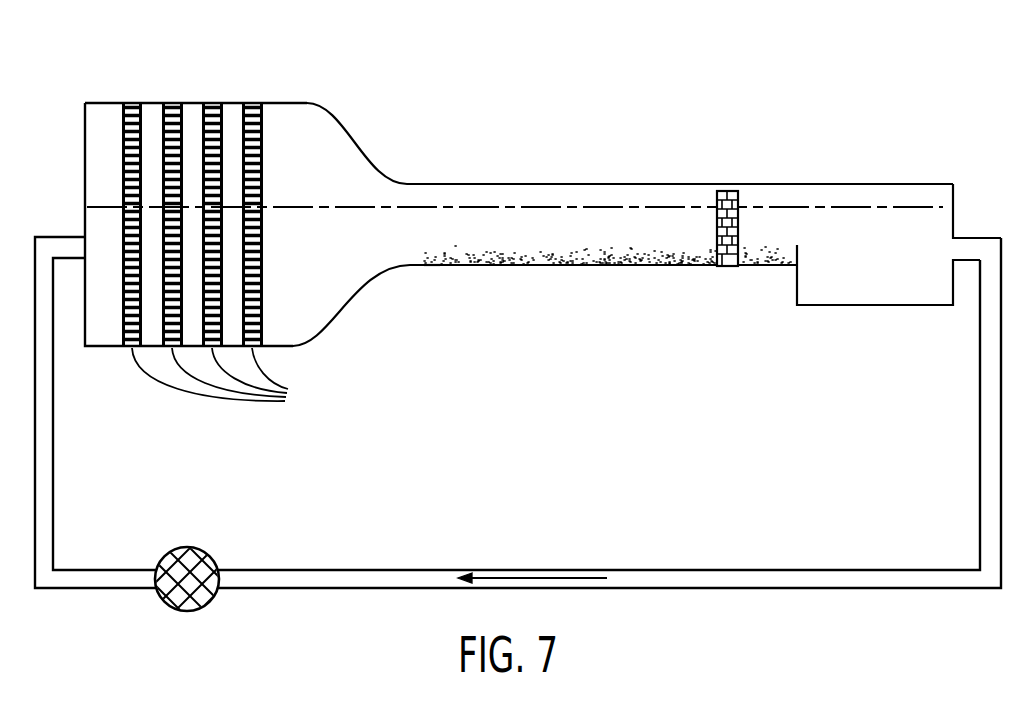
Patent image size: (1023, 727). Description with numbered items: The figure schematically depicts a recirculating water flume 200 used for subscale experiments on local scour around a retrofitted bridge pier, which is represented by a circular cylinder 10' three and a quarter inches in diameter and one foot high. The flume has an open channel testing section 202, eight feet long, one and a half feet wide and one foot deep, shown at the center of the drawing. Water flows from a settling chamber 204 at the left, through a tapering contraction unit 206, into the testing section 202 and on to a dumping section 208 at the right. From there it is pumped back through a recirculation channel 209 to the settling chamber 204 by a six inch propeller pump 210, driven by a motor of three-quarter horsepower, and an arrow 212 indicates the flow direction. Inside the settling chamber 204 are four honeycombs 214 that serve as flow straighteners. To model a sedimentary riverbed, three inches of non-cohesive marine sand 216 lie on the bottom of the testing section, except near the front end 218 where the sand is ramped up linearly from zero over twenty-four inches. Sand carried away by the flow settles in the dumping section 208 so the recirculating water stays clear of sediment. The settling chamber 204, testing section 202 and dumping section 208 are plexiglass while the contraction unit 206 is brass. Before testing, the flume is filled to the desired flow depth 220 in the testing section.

The recirculating water flume 200 is at (588, 90).
The open channel testing section 202 is at (601, 190).
The settling chamber 204 is at (247, 103).
The contraction unit 206 is at (347, 156).
The dumping section 208 is at (845, 192).
The recirculation channel 209 is at (870, 578).
The propeller pump 210 is at (183, 548).
The arrow 212 is at (528, 580).
The honeycombs 214 is at (228, 379).
The non-cohesive marine sand 216 is at (630, 254).
The front end of the testing section 218 is at (440, 266).
The flow depth 220 is at (932, 207).
The circular cylinder 10' is at (750, 195).